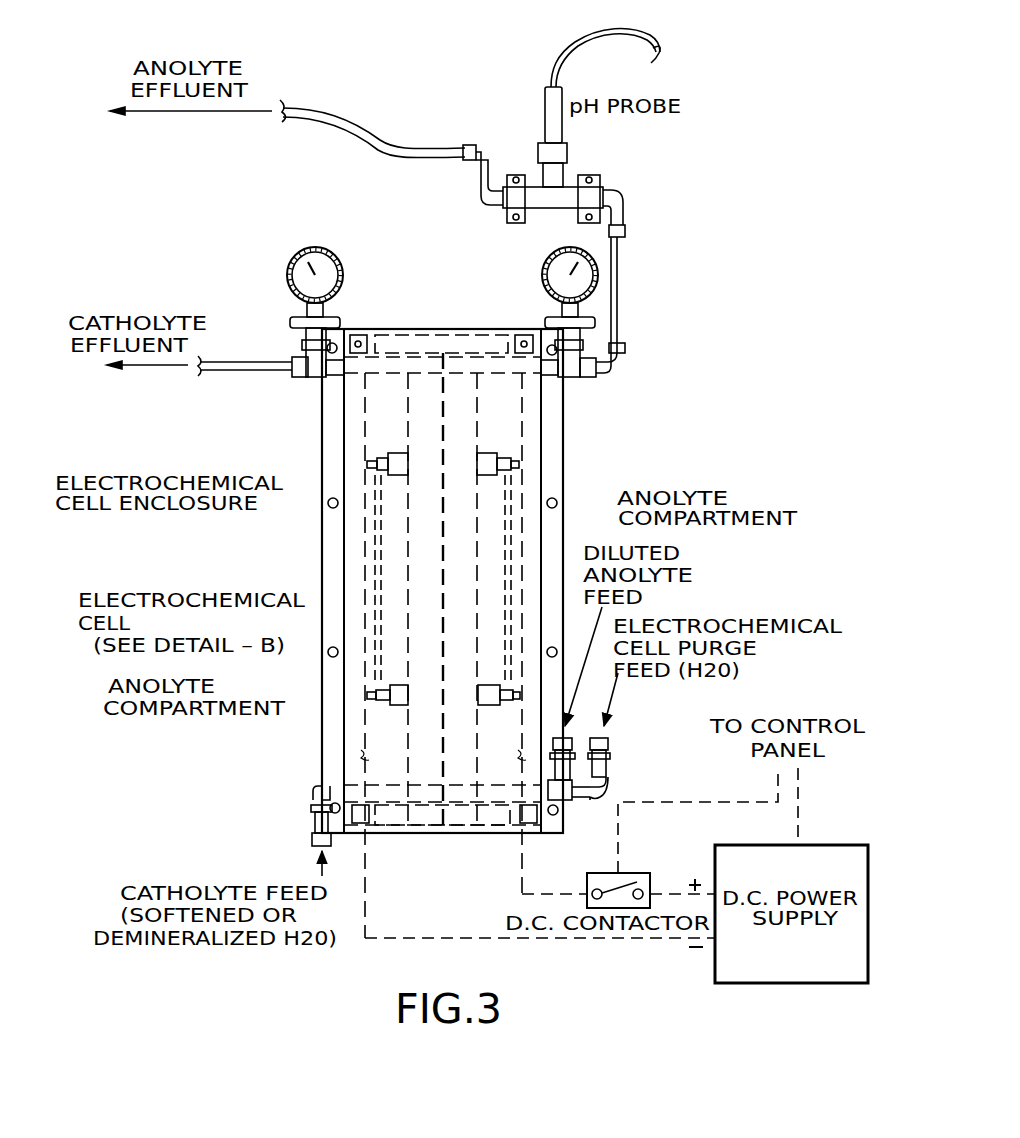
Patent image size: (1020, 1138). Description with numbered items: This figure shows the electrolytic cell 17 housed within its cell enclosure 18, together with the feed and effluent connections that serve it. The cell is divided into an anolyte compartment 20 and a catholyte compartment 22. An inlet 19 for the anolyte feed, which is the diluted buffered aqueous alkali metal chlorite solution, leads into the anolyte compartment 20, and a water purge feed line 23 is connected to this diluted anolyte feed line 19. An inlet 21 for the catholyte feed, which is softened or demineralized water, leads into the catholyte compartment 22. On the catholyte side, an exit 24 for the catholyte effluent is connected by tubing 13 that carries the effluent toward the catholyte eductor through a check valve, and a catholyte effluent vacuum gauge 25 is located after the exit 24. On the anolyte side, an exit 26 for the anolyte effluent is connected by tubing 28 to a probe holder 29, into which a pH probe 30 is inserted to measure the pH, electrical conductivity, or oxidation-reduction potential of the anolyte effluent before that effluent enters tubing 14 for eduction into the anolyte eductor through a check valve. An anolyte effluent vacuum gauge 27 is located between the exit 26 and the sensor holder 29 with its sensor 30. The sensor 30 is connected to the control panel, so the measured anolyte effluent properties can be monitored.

The tubing 13 is at (253, 354).
The tubing 14 is at (351, 121).
The electrolytic cell 17 is at (407, 562).
The cell enclosure 18 is at (375, 449).
The inlet for the anolyte feed 19 is at (572, 740).
The anolyte compartment 20 is at (463, 452).
The inlet for the catholyte feed 21 is at (302, 831).
The catholyte compartment 22 is at (425, 660).
The water purge feed line 23 is at (612, 757).
The exit for the catholyte effluent 24 is at (341, 376).
The catholyte effluent vacuum gauge 25 is at (290, 275).
The exit for the anolyte effluent 26 is at (546, 378).
The anolyte effluent vacuum gauge 27 is at (545, 275).
The tubing 28 is at (624, 298).
The probe holder 29 is at (566, 171).
The pH probe 30 is at (545, 110).